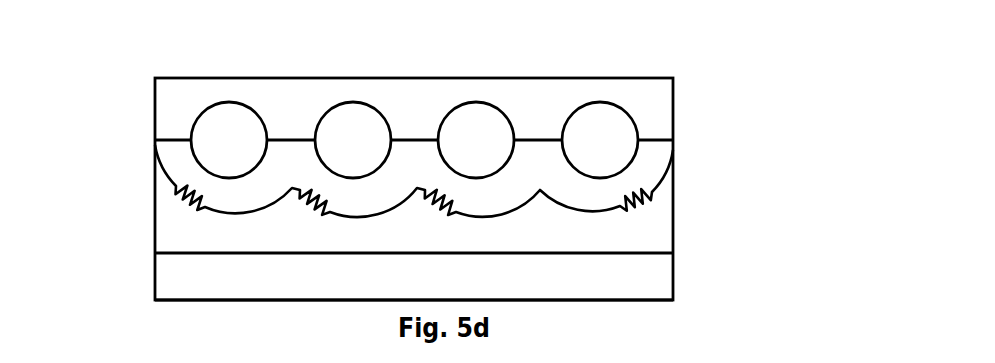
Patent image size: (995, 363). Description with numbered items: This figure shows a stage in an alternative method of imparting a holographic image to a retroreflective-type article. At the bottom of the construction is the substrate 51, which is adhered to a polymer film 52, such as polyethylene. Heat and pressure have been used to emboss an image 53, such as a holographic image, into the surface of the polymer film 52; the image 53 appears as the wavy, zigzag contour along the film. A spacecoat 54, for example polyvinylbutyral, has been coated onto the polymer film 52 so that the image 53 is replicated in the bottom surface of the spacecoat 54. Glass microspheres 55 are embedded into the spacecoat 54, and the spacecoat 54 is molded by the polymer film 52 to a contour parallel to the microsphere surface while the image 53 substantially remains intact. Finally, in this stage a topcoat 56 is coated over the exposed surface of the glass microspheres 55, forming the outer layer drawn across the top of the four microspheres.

The substrate 51 is at (168, 290).
The polymer film 52 is at (168, 230).
The image 53 is at (648, 204).
The spacecoat 54 is at (282, 160).
The glass microspheres 55 is at (232, 138).
The topcoat 56 is at (200, 92).